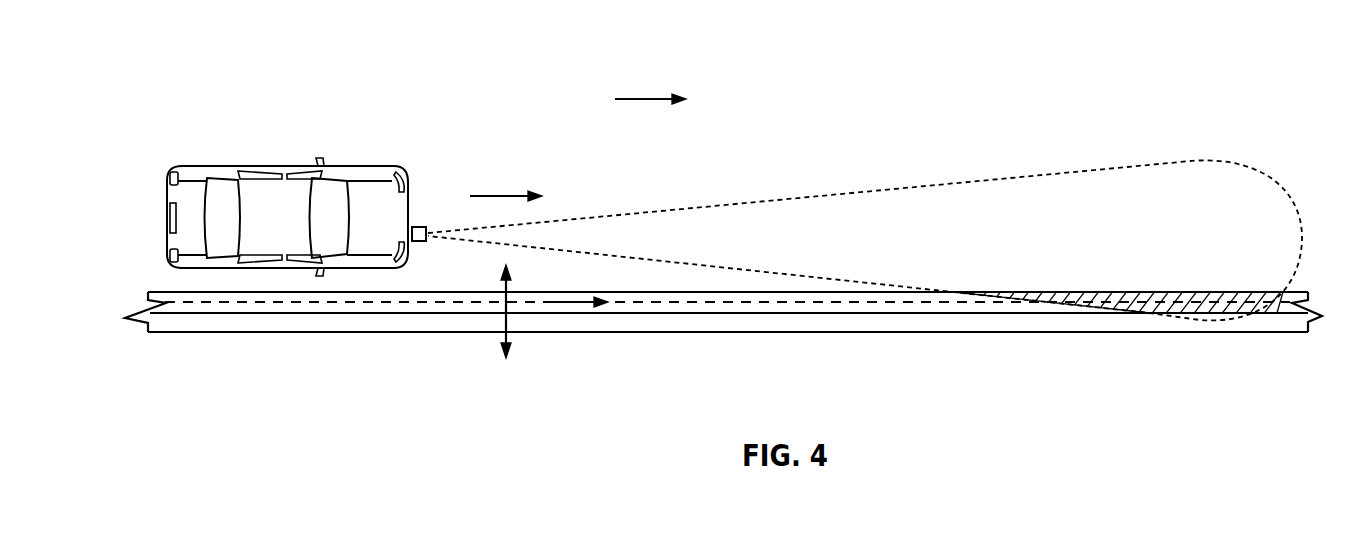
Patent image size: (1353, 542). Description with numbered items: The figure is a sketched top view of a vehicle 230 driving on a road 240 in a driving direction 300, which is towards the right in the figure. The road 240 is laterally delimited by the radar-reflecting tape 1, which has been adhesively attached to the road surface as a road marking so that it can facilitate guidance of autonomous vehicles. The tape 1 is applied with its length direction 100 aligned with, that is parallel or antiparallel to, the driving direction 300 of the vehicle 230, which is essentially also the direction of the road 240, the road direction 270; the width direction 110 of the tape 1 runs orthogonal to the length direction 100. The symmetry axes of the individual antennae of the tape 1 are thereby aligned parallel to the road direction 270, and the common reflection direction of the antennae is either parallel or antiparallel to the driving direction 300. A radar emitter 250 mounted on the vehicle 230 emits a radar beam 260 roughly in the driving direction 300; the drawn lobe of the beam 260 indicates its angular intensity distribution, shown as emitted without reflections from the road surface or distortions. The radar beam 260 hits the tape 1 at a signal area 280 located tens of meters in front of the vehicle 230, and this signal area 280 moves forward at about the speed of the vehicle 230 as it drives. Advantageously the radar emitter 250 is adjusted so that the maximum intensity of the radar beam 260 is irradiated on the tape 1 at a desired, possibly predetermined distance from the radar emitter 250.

The tape 1 is at (862, 307).
The length direction 100 is at (580, 305).
The width direction 110 is at (500, 338).
The vehicle 230 is at (185, 211).
The radar emitter 250 is at (418, 227).
The driving direction 300 is at (505, 195).
The road direction 270 is at (652, 98).
The road 240 is at (643, 176).
The radar beam 260 is at (778, 212).
The signal area 280 is at (1222, 297).